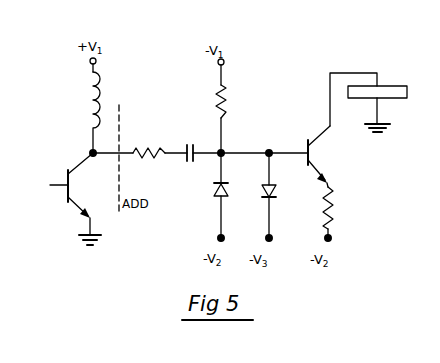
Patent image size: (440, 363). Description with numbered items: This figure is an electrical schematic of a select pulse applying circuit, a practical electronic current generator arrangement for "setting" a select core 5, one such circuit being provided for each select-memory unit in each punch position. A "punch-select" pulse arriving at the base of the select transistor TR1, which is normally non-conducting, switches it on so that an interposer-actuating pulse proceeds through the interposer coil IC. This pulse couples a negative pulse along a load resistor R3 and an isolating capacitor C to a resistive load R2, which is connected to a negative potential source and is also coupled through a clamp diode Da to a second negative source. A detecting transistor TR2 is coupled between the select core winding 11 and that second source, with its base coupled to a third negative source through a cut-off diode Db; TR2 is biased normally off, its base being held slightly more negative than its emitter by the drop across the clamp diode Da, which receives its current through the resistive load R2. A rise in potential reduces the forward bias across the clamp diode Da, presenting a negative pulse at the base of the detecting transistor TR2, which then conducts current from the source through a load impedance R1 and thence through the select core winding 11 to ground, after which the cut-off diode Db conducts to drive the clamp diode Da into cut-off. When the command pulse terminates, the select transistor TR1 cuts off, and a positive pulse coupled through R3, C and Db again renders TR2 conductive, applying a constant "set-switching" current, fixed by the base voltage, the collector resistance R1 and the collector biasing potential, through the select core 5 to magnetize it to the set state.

The select core winding 11 is at (350, 71).
The select core 5 is at (392, 79).
The interposer coil IC is at (84, 96).
The select transistor TR1 is at (69, 207).
The detecting transistor TR2 is at (313, 156).
The load impedance R1 is at (335, 214).
The resistive load R2 is at (230, 106).
The load resistor R3 is at (142, 149).
The isolating capacitor C is at (184, 162).
The clamp diode Da is at (213, 187).
The cut-off diode Db is at (279, 189).